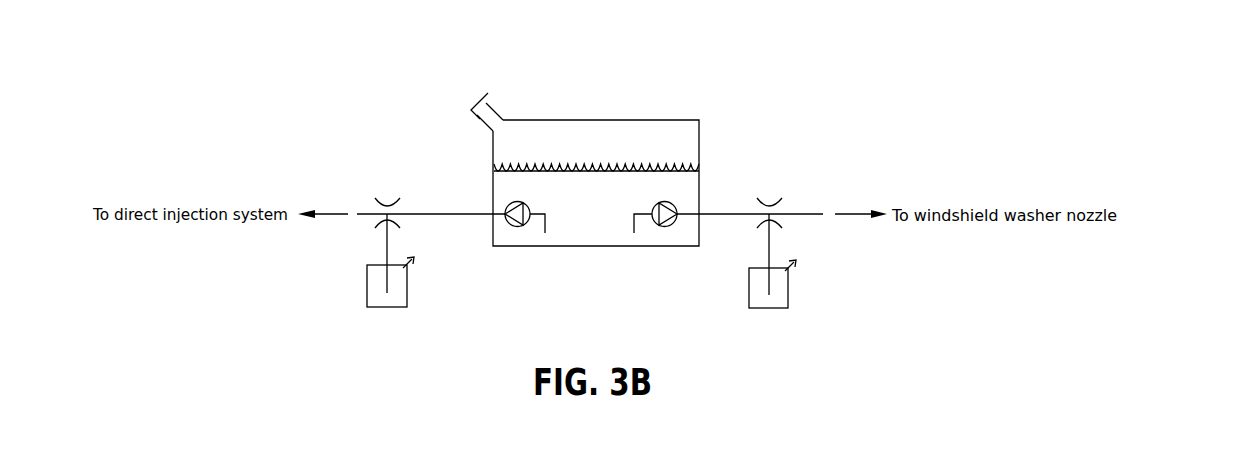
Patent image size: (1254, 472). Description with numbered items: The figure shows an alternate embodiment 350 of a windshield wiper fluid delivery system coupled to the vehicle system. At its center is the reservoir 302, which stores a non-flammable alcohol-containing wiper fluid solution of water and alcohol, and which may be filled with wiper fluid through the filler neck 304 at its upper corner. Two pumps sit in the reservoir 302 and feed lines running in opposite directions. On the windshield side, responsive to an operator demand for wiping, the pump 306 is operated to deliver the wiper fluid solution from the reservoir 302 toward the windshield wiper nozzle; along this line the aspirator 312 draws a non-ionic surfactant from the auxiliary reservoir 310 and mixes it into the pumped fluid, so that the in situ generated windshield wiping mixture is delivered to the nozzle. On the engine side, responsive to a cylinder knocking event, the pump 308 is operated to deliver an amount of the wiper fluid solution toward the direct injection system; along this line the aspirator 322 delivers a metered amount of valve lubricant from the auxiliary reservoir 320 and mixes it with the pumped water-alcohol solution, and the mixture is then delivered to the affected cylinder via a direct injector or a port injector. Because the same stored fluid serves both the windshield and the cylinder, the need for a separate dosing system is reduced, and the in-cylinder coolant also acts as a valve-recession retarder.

The reservoir 302 is at (558, 120).
The filler neck 304 is at (496, 99).
The pump 306 is at (668, 226).
The pump 308 is at (513, 226).
The auxiliary reservoir 310 is at (769, 308).
The aspirator 312 is at (771, 196).
The auxiliary reservoir 320 is at (387, 307).
The aspirator 322 is at (389, 196).
The alternate embodiment 350 is at (1176, 89).